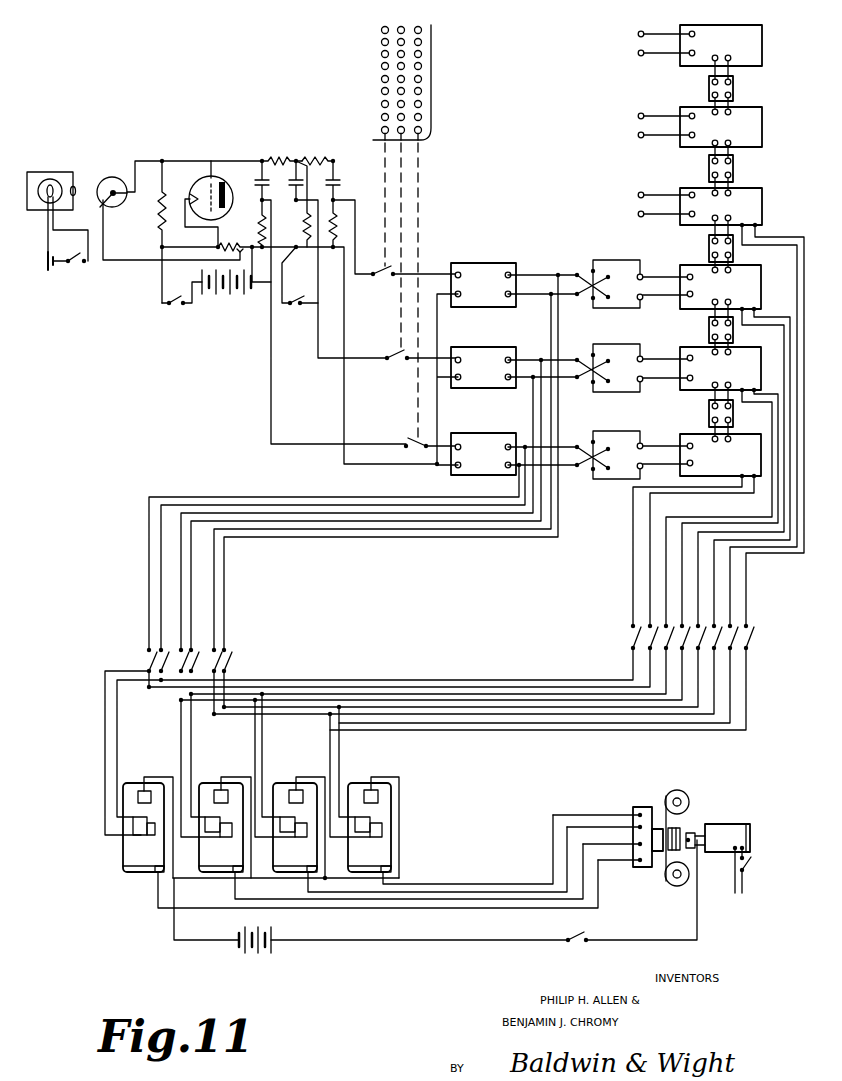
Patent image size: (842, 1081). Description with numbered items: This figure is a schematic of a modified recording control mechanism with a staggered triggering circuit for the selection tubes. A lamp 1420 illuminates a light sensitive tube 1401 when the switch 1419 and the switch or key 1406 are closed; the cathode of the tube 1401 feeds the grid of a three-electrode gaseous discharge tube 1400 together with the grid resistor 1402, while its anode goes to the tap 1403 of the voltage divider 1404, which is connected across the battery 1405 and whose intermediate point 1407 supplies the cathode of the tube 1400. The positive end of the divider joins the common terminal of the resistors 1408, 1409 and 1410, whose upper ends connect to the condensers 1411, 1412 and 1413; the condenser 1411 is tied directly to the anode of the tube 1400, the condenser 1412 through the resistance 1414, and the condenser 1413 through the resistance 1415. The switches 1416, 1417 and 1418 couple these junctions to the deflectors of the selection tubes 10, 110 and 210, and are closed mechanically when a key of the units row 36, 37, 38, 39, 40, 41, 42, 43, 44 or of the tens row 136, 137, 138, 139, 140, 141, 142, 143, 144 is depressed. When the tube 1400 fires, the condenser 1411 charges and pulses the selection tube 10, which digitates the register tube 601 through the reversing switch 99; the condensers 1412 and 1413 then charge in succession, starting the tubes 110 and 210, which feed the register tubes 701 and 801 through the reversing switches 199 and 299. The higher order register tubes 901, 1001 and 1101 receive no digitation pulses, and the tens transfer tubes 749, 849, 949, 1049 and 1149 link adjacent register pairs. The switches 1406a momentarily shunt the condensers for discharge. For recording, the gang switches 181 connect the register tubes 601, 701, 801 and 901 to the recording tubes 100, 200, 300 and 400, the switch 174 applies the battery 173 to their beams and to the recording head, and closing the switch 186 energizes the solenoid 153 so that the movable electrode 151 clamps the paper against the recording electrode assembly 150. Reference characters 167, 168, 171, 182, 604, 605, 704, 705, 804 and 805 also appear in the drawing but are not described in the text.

The selection tube 10 is at (497, 480).
The value key 36 is at (421, 131).
The value key 37 is at (421, 118).
The value key 38 is at (421, 105).
The value key 39 is at (421, 92).
The value key 40 is at (421, 80).
The value key 41 is at (421, 67).
The value key 42 is at (421, 55).
The value key 43 is at (421, 43).
The value key 44 is at (421, 30).
The reversing switch 99 is at (583, 472).
The recording tube 100 is at (360, 842).
The selection tube 110 is at (462, 390).
The value key 136 is at (397, 130).
The value key 137 is at (397, 117).
The value key 138 is at (397, 104).
The value key 139 is at (397, 91).
The value key 140 is at (397, 79).
The value key 141 is at (397, 66).
The value key 142 is at (397, 54).
The value key 143 is at (397, 42).
The value key 144 is at (401, 27).
The recording electrode assembly 150 is at (632, 812).
The movable electrode 151 is at (679, 829).
The solenoid 153 is at (728, 826).
The relay contact 167 is at (155, 805).
The relay contact 168 is at (141, 839).
The drive pulleys 171 is at (660, 828).
The battery 173 is at (263, 953).
The switch 174 is at (484, 904).
The gang switches 181 is at (752, 651).
The switch bank 182 is at (145, 664).
The switch 186 is at (748, 870).
The reversing switch 199 is at (583, 385).
The recording tube 200 is at (391, 838).
The selection tube 210 is at (503, 312).
The reversing switch 299 is at (583, 301).
The recording tube 300 is at (420, 834).
The recording tube 400 is at (450, 830).
The register tube 601 is at (718, 470).
The contact 604 is at (643, 463).
The contact 605 is at (655, 432).
The register tube 701 is at (705, 393).
The contact 704 is at (643, 381).
The contact 705 is at (658, 351).
The tens transfer tube 749 is at (708, 424).
The register tube 801 is at (762, 285).
The contact 804 is at (643, 300).
The contact 805 is at (651, 253).
The tens transfer tube 849 is at (733, 335).
The register tube 901 is at (701, 222).
The tens transfer tube 949 is at (708, 258).
The register tube 1001 is at (700, 146).
The tens transfer tube 1049 is at (708, 175).
The register tube 1101 is at (700, 62).
The tens transfer tube 1149 is at (708, 91).
The electric discharge tube 1400 is at (213, 176).
The light sensitive tube 1401 is at (112, 176).
The grid resistor 1402 is at (160, 218).
The tap 1403 is at (238, 262).
The voltage divider 1404 is at (236, 255).
The battery 1405 is at (227, 296).
The switch 1406 is at (165, 297).
The switch 1406a is at (295, 305).
The intermediate point 1407 is at (216, 246).
The resistor 1408 is at (259, 236).
The resistor 1409 is at (309, 218).
The resistor 1410 is at (338, 233).
The condenser 1411 is at (280, 180).
The condenser 1412 is at (338, 155).
The condenser 1413 is at (338, 187).
The resistance 1414 is at (277, 158).
The resistance 1415 is at (308, 157).
The switch 1416 is at (420, 444).
The switch 1417 is at (397, 366).
The switch 1418 is at (406, 283).
The switch 1419 is at (67, 254).
The lamp 1420 is at (52, 178).